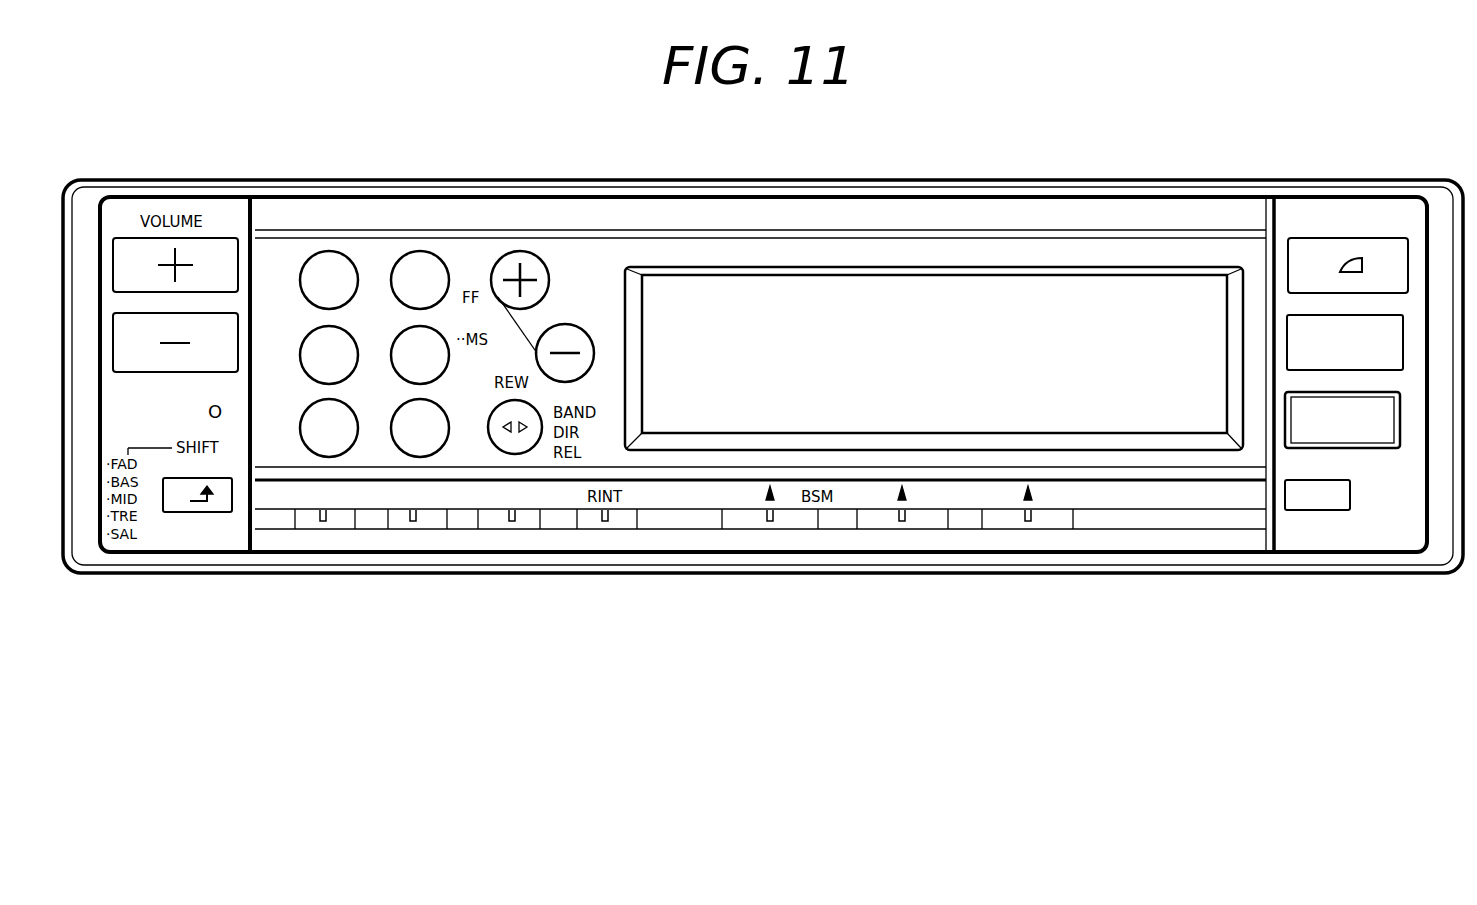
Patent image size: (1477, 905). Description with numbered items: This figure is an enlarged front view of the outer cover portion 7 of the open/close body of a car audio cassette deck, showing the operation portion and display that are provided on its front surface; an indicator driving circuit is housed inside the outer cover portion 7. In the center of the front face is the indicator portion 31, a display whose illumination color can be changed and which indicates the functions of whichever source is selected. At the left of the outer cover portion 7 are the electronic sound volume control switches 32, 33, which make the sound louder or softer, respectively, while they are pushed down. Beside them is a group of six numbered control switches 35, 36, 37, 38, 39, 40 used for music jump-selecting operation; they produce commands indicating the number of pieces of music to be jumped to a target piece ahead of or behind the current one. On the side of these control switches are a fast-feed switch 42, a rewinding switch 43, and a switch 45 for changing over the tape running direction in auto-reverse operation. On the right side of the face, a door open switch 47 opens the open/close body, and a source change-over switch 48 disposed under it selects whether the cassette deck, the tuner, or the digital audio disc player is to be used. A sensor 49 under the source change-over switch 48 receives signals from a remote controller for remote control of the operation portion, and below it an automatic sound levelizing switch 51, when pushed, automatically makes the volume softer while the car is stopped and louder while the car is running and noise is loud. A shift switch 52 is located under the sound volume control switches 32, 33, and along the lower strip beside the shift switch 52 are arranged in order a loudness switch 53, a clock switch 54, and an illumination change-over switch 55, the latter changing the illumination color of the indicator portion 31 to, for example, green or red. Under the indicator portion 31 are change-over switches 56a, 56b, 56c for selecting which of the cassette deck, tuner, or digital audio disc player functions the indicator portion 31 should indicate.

The outer cover portion 7 is at (88, 557).
The indicator portion 31 is at (972, 300).
The electronic sound volume control switch 32 is at (230, 248).
The electronic sound volume control switch 33 is at (225, 345).
The control switch 35 is at (330, 251).
The control switch 36 is at (420, 251).
The control switch 37 is at (353, 330).
The control switch 38 is at (437, 328).
The control switch 39 is at (303, 448).
The control switch 40 is at (395, 450).
The fast-feed switch 42 is at (527, 252).
The rewinding switch 43 is at (565, 330).
The tape running direction change-over switch 45 is at (497, 452).
The door open switch 47 is at (1308, 250).
The source change-over switch 48 is at (1293, 337).
The sensor 49 is at (1383, 448).
The automatic sound levelizing switch 51 is at (1302, 510).
The shift switch 52 is at (200, 512).
The loudness switch 53 is at (323, 528).
The clock switch 54 is at (410, 528).
The illumination change-over switch 55 is at (510, 528).
The change-over switch 56a is at (752, 520).
The change-over switch 56b is at (883, 525).
The change-over switch 56c is at (1007, 523).